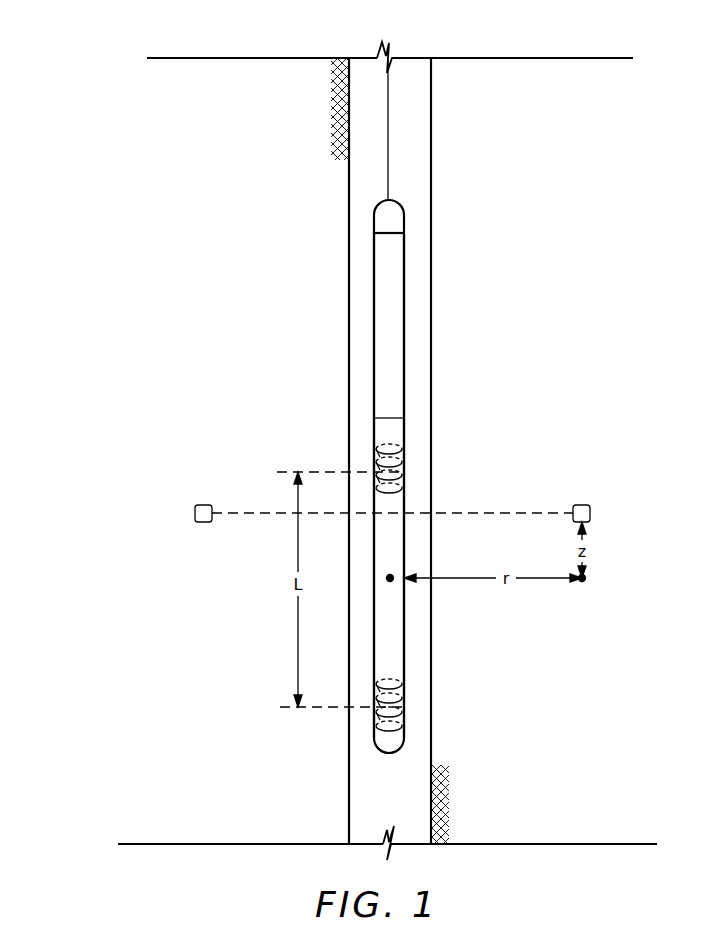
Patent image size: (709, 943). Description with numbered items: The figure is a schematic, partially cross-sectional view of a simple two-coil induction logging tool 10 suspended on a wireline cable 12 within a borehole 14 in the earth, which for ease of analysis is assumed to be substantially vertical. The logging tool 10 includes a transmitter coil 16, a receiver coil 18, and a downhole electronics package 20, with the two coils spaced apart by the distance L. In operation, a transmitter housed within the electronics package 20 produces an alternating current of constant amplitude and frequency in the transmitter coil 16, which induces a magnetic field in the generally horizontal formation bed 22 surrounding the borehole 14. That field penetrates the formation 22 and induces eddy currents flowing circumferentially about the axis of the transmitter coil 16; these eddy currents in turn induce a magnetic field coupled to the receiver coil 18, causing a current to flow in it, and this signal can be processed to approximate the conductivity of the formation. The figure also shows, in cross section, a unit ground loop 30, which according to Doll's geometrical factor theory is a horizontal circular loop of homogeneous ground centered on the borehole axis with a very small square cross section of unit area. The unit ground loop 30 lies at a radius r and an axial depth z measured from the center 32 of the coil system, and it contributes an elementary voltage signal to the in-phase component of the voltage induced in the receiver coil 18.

The induction logging tool 10 is at (404, 214).
The wireline cable 12 is at (388, 108).
The borehole 14 is at (422, 160).
The transmitter coil 16 is at (405, 705).
The receiver coil 18 is at (405, 445).
The downhole electronics package 20 is at (405, 340).
The formation bed 22 is at (613, 361).
The unit ground loop 30 is at (200, 505).
The center of the coil system 32 is at (390, 582).